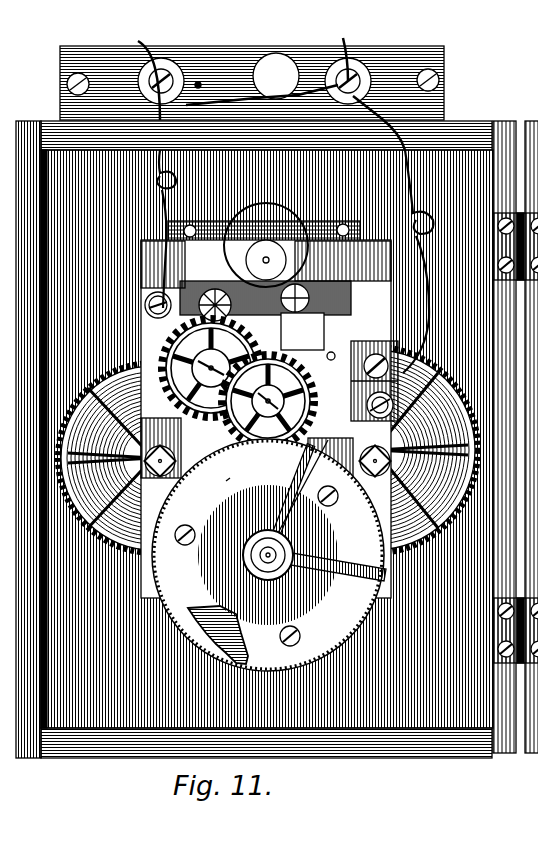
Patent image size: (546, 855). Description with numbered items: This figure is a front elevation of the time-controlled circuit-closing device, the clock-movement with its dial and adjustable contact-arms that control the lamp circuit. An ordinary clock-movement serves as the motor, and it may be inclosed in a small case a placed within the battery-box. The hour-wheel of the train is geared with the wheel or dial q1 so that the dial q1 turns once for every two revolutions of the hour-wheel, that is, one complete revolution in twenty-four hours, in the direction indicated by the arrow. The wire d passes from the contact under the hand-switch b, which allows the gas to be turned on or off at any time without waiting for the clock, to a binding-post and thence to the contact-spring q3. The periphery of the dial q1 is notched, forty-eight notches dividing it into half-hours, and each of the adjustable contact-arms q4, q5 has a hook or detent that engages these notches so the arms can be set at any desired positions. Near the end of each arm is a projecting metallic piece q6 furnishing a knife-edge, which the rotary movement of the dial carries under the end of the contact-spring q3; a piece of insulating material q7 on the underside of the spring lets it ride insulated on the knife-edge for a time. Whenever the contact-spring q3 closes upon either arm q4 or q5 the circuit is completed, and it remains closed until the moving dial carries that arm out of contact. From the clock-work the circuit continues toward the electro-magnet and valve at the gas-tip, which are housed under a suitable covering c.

The wire d is at (128, 33).
The hand-switch b is at (262, 91).
The case a is at (428, 356).
The dial q1 is at (222, 538).
The contact-spring q3 is at (262, 522).
The adjustable contact-arm q4 is at (278, 491).
The adjustable contact-arm q5 is at (326, 570).
The projecting metallic piece q6 is at (320, 495).
The insulating material q7 is at (363, 440).
The covering c is at (218, 473).